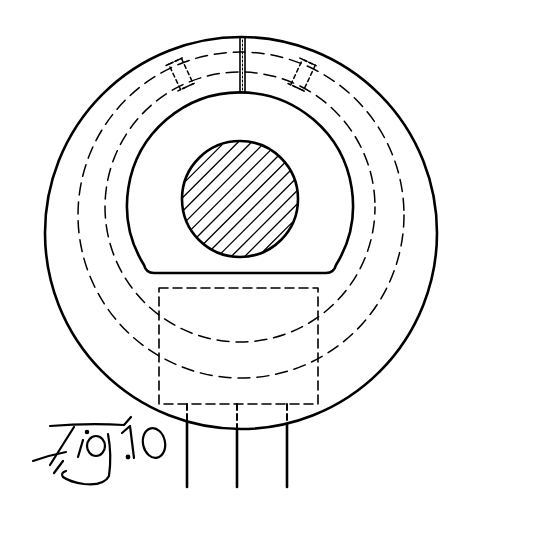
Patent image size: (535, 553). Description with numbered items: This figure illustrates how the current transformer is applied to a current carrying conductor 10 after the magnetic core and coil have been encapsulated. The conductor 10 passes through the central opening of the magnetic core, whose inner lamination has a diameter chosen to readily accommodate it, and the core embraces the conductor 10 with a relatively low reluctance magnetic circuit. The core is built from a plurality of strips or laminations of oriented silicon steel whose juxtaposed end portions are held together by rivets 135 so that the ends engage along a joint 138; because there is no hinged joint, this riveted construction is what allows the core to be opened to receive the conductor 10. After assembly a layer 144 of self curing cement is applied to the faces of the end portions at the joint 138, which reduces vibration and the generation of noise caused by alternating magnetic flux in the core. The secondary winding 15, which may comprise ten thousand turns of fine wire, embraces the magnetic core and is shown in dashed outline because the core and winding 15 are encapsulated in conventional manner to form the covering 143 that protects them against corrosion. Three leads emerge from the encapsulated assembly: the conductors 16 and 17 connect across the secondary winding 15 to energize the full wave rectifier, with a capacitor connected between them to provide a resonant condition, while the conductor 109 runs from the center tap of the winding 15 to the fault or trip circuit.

The conductor 10 is at (294, 186).
The secondary winding 15 is at (313, 383).
The conductor 16 is at (186, 466).
The conductor 17 is at (290, 475).
The conductor 109 is at (236, 483).
The rivets 135 is at (170, 64).
The joint 138 is at (247, 88).
The covering 143 is at (400, 126).
The layer of self curing cement 144 is at (239, 94).